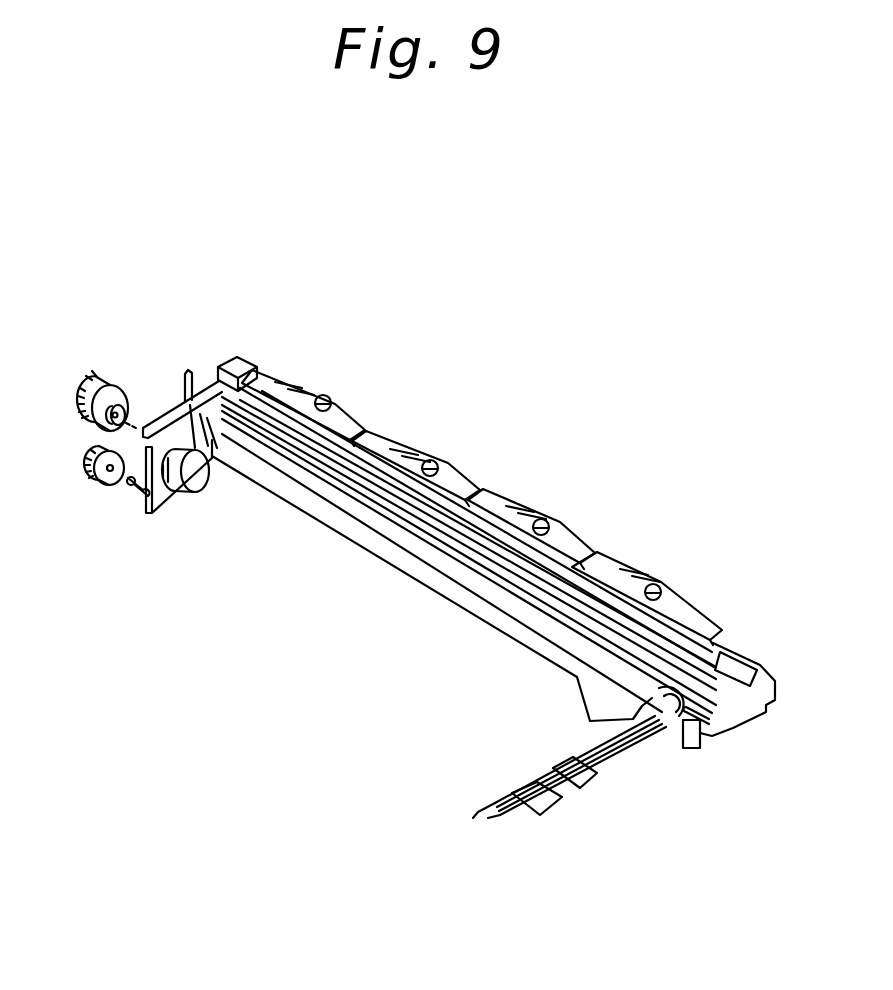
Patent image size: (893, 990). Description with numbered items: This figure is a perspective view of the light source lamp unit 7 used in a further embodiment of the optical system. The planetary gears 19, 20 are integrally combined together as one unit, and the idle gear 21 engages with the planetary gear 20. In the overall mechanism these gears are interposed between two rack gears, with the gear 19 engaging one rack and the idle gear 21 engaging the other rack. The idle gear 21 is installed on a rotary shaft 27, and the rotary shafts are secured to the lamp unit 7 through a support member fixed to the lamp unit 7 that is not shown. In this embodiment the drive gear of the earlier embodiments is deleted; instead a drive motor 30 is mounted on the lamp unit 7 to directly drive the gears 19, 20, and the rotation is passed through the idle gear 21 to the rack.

The lamp unit 7 is at (459, 587).
The planetary gear 19 is at (119, 368).
The planetary gear 20 is at (123, 392).
The idle gear 21 is at (104, 485).
The rotary shaft 27 is at (142, 497).
The drive motor 30 is at (194, 488).